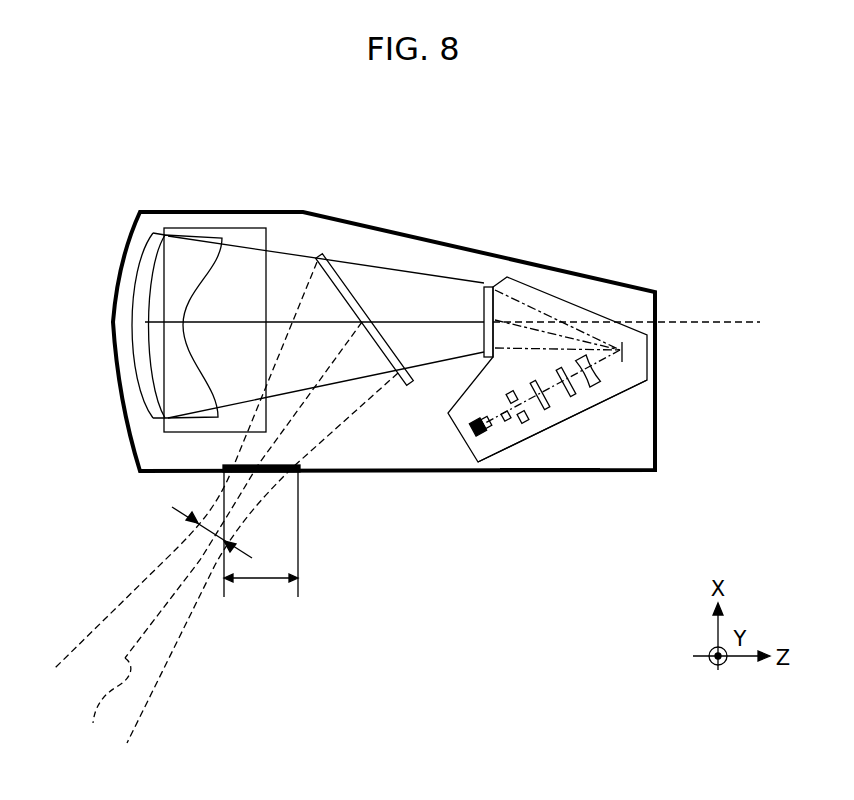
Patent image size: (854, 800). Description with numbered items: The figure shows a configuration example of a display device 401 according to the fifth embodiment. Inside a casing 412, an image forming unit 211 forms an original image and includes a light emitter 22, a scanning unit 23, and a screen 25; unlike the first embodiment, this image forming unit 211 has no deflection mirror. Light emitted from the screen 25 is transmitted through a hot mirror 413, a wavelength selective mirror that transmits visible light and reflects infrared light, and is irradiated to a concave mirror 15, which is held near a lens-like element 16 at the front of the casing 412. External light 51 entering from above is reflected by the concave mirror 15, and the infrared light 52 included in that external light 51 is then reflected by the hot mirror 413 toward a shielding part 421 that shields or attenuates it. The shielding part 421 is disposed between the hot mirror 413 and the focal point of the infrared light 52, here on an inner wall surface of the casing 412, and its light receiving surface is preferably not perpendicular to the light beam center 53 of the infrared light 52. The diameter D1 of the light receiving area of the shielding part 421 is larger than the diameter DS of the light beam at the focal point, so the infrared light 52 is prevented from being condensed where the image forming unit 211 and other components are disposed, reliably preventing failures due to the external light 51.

The display device 401 is at (367, 170).
The concave mirror 15 is at (145, 253).
The projection lens 16 is at (189, 233).
The external light 51 is at (246, 233).
The hot mirror 413 is at (319, 254).
The screen 25 is at (484, 294).
The light emitter 22 is at (553, 403).
The scanning unit 23 is at (624, 346).
The image forming unit 211 is at (598, 420).
The casing 412 is at (530, 472).
The shielding part 421 is at (235, 466).
The infrared light 52 is at (373, 402).
The light beam center 53 is at (105, 705).
The diameter of light beam at focal point DS is at (212, 522).
The diameter of light receiving area D1 is at (261, 543).